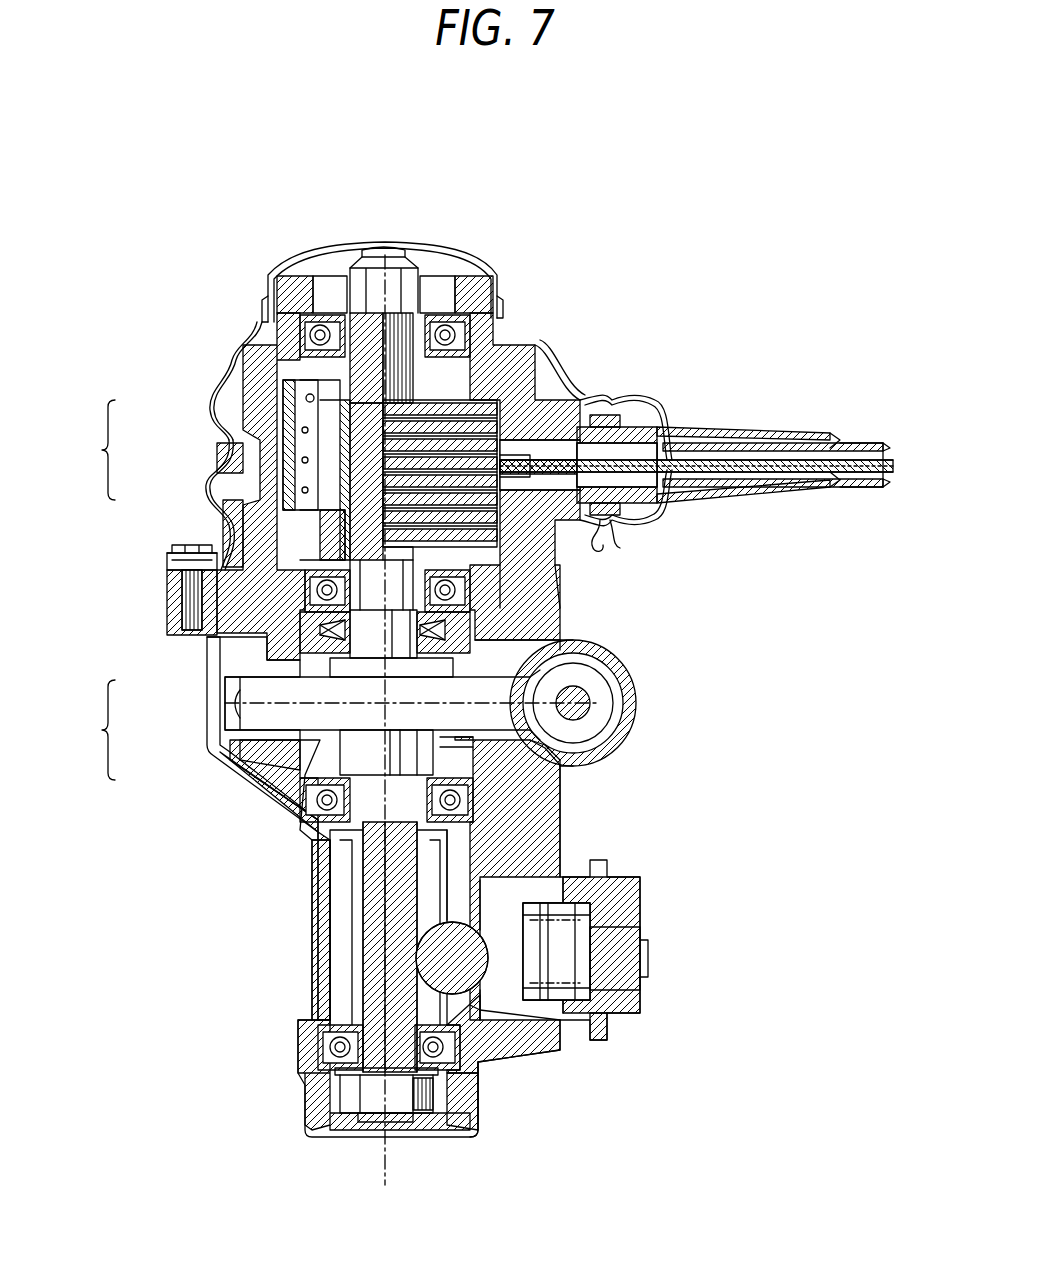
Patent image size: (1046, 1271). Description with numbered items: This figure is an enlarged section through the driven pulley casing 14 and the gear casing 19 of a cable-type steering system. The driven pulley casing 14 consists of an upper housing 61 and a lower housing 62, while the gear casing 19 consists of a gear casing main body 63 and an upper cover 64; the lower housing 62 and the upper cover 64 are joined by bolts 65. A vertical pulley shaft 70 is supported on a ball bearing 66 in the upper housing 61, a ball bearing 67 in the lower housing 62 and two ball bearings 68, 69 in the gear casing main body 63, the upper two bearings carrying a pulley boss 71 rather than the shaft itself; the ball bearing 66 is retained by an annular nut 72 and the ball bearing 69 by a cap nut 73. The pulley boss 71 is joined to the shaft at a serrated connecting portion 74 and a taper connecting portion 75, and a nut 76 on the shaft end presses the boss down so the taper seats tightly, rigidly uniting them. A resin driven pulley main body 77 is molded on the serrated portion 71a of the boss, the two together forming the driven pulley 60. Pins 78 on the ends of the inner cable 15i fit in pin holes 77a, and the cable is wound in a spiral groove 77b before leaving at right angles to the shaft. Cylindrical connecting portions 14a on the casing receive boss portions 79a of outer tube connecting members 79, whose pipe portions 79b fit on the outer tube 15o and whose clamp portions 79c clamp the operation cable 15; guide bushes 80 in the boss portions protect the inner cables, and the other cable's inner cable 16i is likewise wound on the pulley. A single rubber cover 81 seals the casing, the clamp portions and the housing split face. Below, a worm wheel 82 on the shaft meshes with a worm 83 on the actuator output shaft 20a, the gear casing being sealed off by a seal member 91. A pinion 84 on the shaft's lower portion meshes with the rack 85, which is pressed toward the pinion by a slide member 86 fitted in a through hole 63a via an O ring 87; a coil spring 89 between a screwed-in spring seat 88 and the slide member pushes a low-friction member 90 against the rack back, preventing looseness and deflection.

The driven pulley casing 14 is at (93, 450).
The cylindrical connecting portion 14a is at (650, 400).
The operation cable 15 is at (856, 440).
The inner cable 15i is at (520, 405).
The outer tube 15o is at (853, 482).
The inner cable 16i is at (497, 502).
The gear casing 19 is at (93, 730).
The output shaft 20a is at (585, 688).
The driven pulley 60 is at (512, 443).
The upper housing 61 is at (232, 430).
The lower housing 62 is at (233, 523).
The gear casing main body 63 is at (207, 752).
The through hole 63a is at (492, 1040).
The upper cover 64 is at (172, 640).
The bolt 65 is at (175, 560).
The ball bearing 66 is at (447, 325).
The ball bearing 67 is at (562, 580).
The ball bearing 68 is at (285, 825).
The ball bearing 69 is at (325, 1052).
The pulley shaft 70 is at (396, 556).
The pulley boss 71 is at (383, 442).
The serrated portion 71a is at (272, 632).
The annular nut 72 is at (270, 282).
The cap nut 73 is at (348, 1138).
The serrated connecting portion 74 is at (360, 330).
The taper connecting portion 75 is at (372, 495).
The nut 76 is at (392, 295).
The driven pulley main body 77 is at (490, 365).
The pin hole 77a is at (265, 318).
The spiral groove 77b is at (260, 533).
The cylindrical pin 78 is at (300, 405).
The outer tube connecting member 79 is at (685, 438).
The boss portion 79a is at (600, 415).
The pipe portion 79b is at (715, 430).
The clamp portion 79c is at (762, 441).
The guide bush 80 is at (628, 500).
The rubber cover 81 is at (383, 258).
The worm wheel 82 is at (262, 775).
The worm 83 is at (590, 725).
The pinion 84 is at (360, 985).
The rack 85 is at (500, 1010).
The slide member 86 is at (488, 862).
The O ring 87 is at (540, 870).
The spring seat 88 is at (627, 930).
The coil spring 89 is at (607, 1035).
The low-friction member 90 is at (495, 905).
The seal member 91 is at (382, 705).